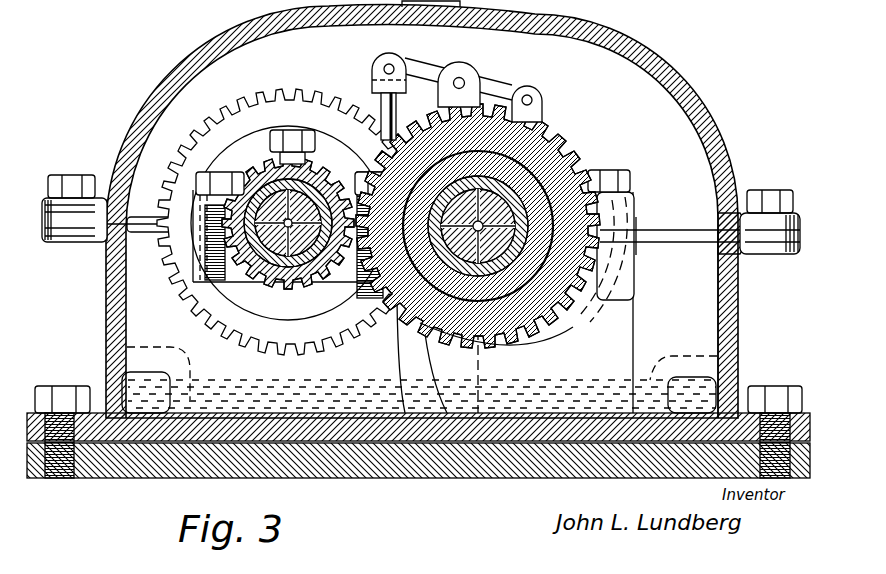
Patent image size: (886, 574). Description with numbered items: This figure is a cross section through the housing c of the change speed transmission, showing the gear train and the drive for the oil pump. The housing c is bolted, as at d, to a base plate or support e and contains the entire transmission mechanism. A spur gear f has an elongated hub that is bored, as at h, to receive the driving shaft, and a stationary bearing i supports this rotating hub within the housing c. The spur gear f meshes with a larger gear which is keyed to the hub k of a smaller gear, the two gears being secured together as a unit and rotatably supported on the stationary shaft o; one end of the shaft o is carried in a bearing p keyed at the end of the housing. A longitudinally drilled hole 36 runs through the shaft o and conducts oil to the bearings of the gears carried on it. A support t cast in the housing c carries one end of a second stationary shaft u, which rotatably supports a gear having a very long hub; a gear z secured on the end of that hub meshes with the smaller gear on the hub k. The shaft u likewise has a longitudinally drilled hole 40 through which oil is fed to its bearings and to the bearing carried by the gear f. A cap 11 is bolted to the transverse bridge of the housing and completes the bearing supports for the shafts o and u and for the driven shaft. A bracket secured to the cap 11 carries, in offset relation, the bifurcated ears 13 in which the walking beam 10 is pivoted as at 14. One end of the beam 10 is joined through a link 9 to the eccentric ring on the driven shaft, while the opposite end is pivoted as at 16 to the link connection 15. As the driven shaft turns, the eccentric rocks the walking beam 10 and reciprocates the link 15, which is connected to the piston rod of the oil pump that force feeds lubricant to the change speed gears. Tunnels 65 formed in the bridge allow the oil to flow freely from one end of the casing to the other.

The housing c is at (208, 42).
The hub k is at (243, 108).
The pivot 16 is at (378, 62).
The link connection 15 is at (380, 98).
The walking beam 10 is at (440, 52).
The bifurcated ears 13 is at (462, 80).
The pivot 14 is at (478, 80).
The link 9 is at (540, 108).
The stationary bearing i is at (575, 123).
The longitudinally drilled hole 36 is at (612, 170).
The cap 11 is at (636, 207).
The base plate e is at (704, 4).
The tunnels 65 is at (52, 385).
The bolts d is at (50, 385).
The gear z is at (213, 307).
The spur gear f is at (245, 300).
The longitudinally drilled hole 40 is at (305, 305).
The stationary shaft u is at (385, 310).
The support t is at (486, 364).
The bore h is at (573, 294).
The stationary shaft o is at (560, 323).
The bearing p is at (707, 298).